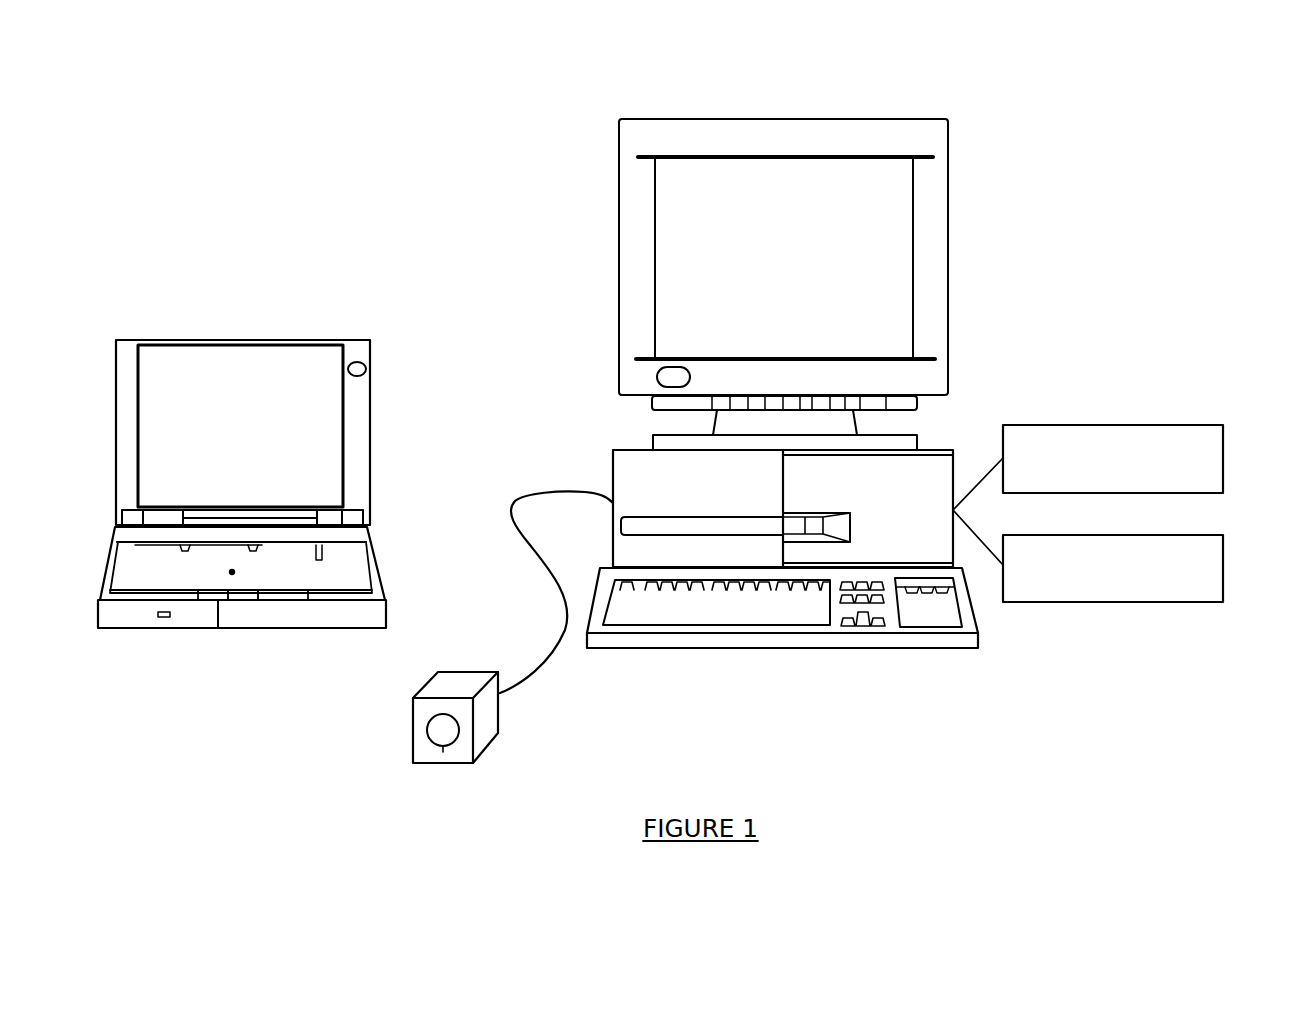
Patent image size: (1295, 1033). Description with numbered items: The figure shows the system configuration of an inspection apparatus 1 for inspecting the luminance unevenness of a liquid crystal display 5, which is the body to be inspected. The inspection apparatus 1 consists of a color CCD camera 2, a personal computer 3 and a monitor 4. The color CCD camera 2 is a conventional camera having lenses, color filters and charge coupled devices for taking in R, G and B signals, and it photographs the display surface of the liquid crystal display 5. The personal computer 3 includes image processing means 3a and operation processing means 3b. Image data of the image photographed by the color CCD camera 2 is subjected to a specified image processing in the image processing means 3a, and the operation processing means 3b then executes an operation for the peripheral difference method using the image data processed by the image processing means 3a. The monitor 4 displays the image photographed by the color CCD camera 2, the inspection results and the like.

The inspection apparatus 1 is at (1004, 79).
The color CCD camera 2 is at (492, 745).
The personal computer 3 is at (613, 472).
The image processing means 3a is at (1223, 447).
The operation processing means 3b is at (1223, 558).
The monitor 4 is at (948, 273).
The liquid crystal display 5 is at (323, 420).